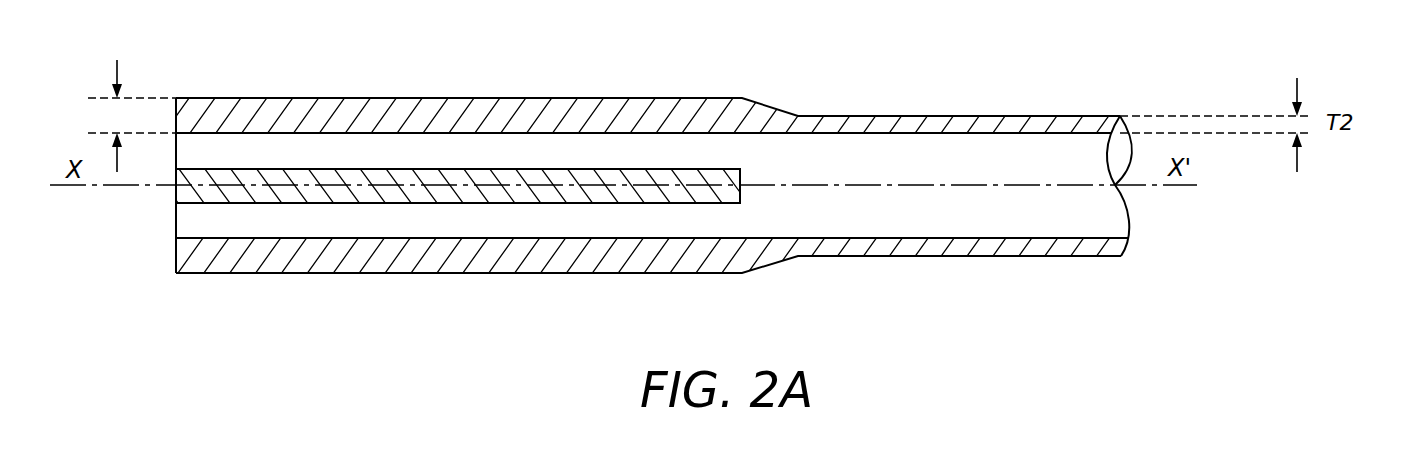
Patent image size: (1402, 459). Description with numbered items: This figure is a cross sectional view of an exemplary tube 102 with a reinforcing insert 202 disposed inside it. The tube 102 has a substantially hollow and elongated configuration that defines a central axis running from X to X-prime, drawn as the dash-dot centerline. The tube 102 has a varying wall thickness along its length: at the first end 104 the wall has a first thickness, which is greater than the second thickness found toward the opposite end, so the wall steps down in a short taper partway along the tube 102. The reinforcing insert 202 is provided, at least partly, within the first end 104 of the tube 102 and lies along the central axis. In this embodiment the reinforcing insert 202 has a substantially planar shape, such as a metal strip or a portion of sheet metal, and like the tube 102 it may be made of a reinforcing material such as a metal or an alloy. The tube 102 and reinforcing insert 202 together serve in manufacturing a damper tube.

The tube 102 is at (742, 50).
The first end 104 is at (172, 68).
The reinforcing insert 202 is at (590, 175).